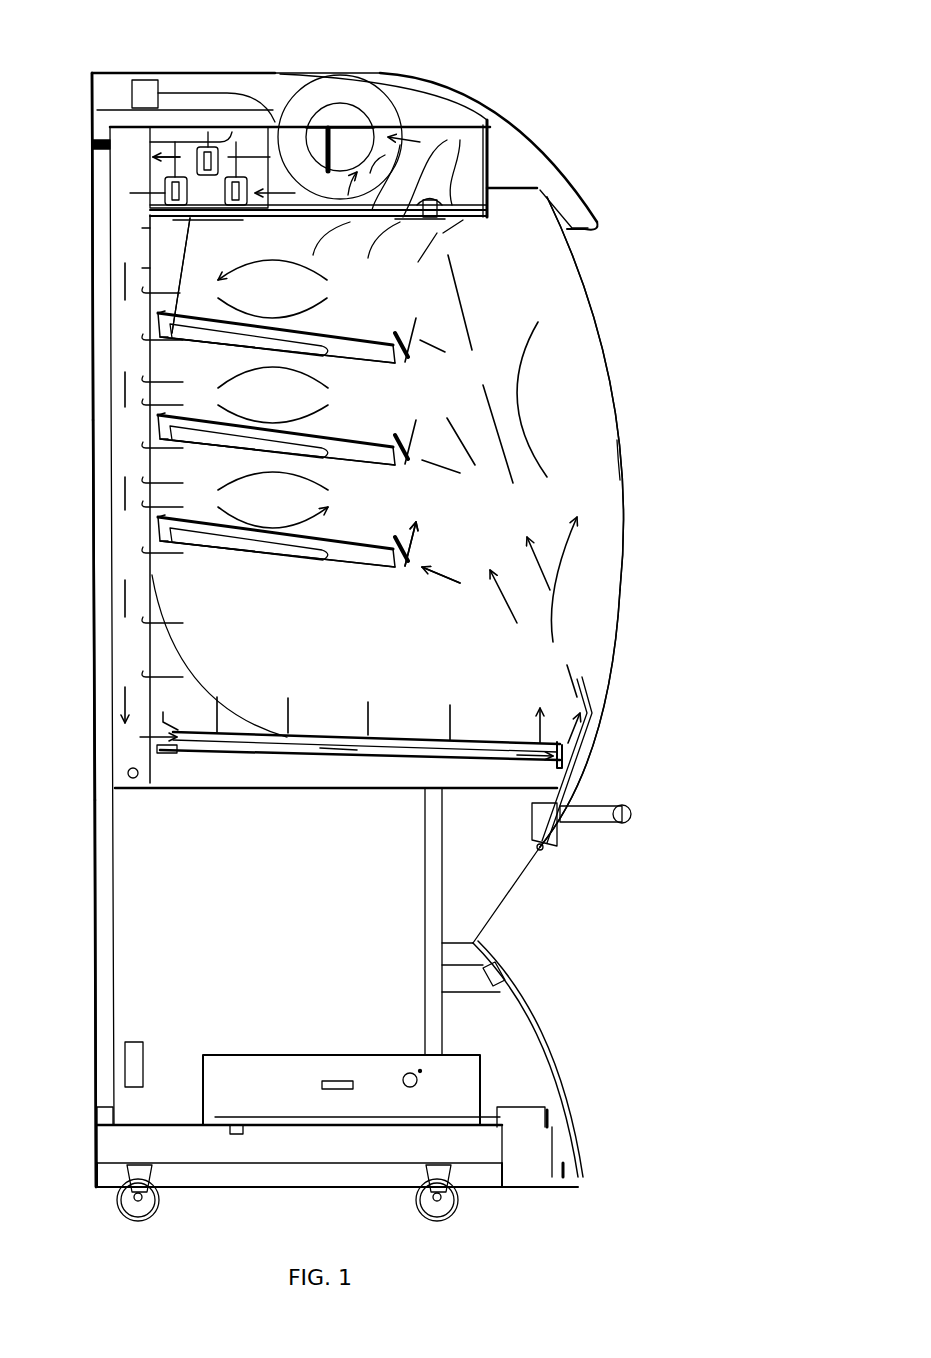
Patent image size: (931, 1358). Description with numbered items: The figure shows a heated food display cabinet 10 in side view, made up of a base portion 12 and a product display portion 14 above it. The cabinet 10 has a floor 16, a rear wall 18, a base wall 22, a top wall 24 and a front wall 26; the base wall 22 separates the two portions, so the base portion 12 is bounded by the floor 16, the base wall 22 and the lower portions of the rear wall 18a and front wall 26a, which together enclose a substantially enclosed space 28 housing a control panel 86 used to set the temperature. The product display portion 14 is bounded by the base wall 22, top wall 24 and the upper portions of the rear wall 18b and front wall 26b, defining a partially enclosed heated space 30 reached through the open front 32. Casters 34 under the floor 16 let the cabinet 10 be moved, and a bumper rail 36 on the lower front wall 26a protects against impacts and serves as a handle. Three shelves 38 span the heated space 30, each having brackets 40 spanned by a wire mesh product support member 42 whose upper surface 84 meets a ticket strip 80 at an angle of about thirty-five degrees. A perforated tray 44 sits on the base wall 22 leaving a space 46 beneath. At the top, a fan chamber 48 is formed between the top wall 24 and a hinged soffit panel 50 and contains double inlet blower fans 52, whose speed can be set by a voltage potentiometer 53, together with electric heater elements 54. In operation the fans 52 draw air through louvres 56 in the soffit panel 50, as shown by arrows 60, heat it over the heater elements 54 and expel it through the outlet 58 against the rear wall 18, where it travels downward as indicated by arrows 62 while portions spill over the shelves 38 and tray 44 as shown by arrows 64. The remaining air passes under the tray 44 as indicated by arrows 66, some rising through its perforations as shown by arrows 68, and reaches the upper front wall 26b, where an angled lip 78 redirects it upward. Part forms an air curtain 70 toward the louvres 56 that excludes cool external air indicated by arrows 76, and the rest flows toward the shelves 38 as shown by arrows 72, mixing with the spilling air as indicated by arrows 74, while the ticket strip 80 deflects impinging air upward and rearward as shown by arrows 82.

The cabinet 10 is at (568, 92).
The base portion 12 is at (145, 936).
The product display portion 14 is at (593, 353).
The floor 16 is at (312, 1160).
The rear wall 18 is at (95, 572).
The lower portion of the rear wall 18a is at (95, 870).
The upper portion of the rear wall 18b is at (100, 253).
The base wall 22 is at (265, 790).
The top wall 24 is at (273, 75).
The front wall 26 is at (545, 852).
The lower portion of the front wall 26a is at (502, 913).
The upper portion of the front wall 26b is at (585, 740).
The enclosed space 28 is at (290, 958).
The heated space 30 is at (513, 298).
The open front 32 is at (612, 445).
The casters 34 is at (145, 1223).
The bumper rail 36 is at (632, 814).
The shelves 38 is at (157, 322).
The brackets 40 is at (358, 362).
The product support member 42 is at (395, 336).
The tray 44 is at (248, 735).
The space 46 is at (185, 748).
The fan chamber 48 is at (412, 103).
The soffit panel 50 is at (250, 215).
The blower fans 52 is at (333, 78).
The voltage potentiometer 53 is at (150, 80).
The electric heater elements 54 is at (237, 177).
The louvres 56 is at (418, 166).
The outlet 58 is at (150, 152).
The arrows indicating air drawn into fan chamber 60 is at (340, 255).
The arrows indicating downward air flow 62 is at (122, 283).
The arrows indicating spilling air 64 is at (153, 297).
The arrows indicating air under tray 66 is at (345, 762).
The arrows indicating air rising through tray 68 is at (370, 712).
The air curtain 70 is at (468, 290).
The arrows indicating air toward shelves 72 is at (486, 638).
The arrows indicating mixing air 74 is at (270, 262).
The arrows indicating external cool air 76 is at (520, 398).
The angled lip 78 is at (588, 688).
The ticket strip 80 is at (405, 570).
The arrows indicating air deflected by ticket strip 82 is at (425, 555).
The upper surface of the product support member 84 is at (177, 501).
The control panel 86 is at (295, 1062).